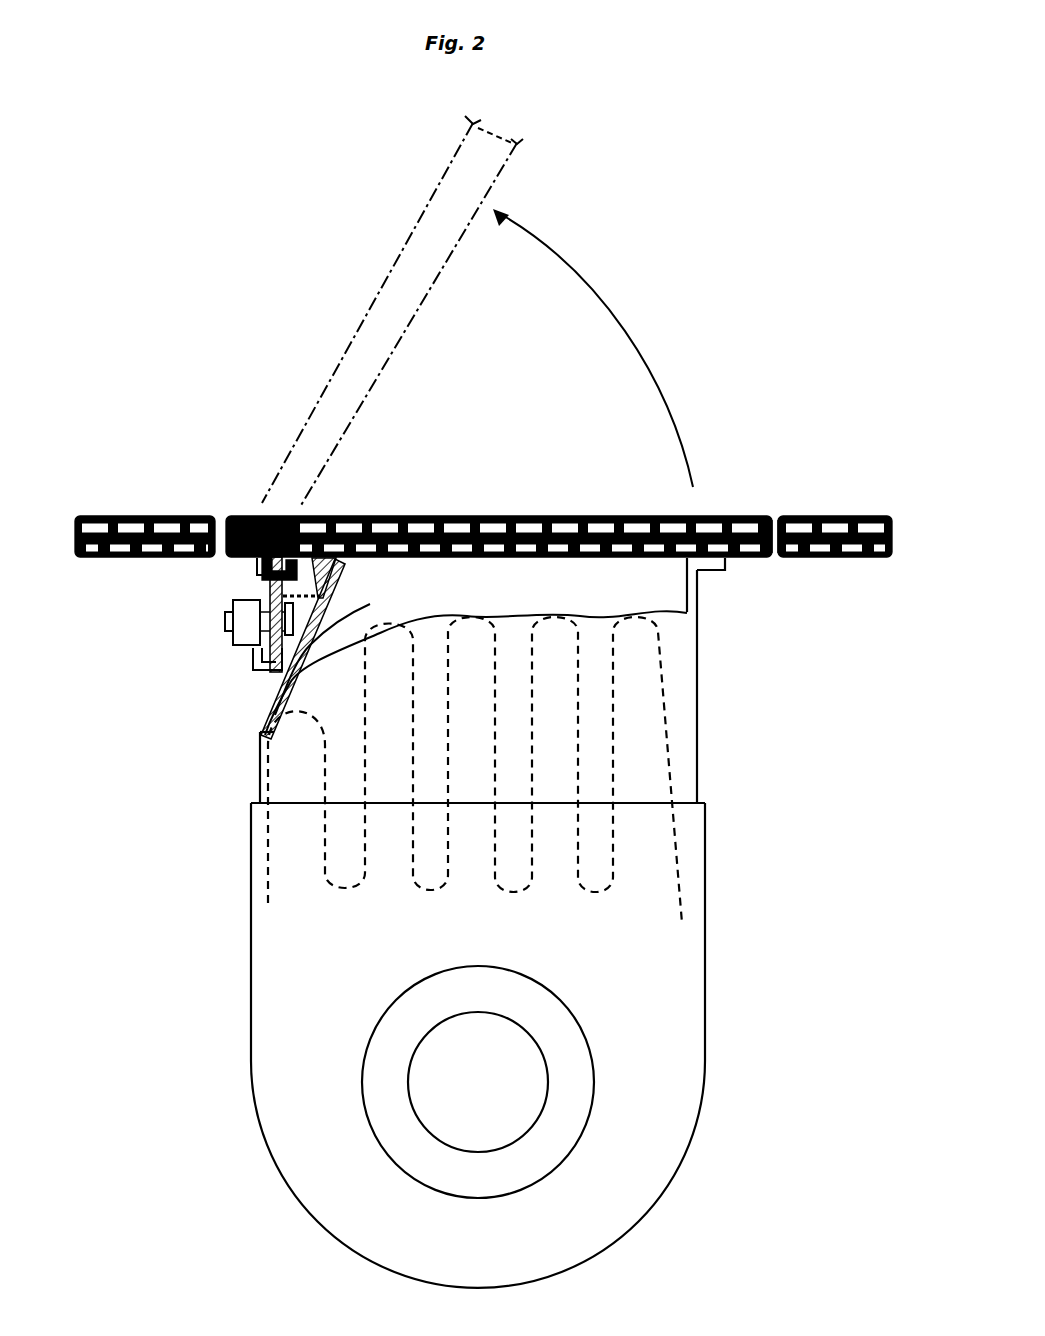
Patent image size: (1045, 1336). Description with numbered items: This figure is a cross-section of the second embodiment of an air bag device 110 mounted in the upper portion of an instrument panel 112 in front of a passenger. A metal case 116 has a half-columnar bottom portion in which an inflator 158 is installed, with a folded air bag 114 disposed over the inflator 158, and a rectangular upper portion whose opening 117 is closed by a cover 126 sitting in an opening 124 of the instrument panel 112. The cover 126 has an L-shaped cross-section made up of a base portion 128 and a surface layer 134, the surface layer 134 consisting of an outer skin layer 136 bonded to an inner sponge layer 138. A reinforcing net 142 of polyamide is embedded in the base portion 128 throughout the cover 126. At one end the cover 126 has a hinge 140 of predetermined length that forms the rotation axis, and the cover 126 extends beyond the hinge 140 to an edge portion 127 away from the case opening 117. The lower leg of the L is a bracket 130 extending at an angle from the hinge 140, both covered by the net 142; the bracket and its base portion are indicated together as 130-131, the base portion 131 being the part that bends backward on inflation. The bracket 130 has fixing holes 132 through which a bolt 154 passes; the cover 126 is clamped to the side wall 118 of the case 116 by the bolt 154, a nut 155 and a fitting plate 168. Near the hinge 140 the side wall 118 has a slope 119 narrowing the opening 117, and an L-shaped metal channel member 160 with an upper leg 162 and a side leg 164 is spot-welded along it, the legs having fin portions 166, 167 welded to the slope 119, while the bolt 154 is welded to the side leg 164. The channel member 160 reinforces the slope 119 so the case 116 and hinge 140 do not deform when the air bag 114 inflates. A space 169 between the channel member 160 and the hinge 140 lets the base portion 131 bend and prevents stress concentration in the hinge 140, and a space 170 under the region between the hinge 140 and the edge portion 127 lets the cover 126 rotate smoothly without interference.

The air bag device 110 is at (655, 1225).
The instrument panel 112 is at (845, 508).
The air bag 114 is at (322, 842).
The case 116 is at (660, 785).
The opening 117 is at (660, 578).
The side wall 118 is at (257, 772).
The slope 119 is at (263, 735).
The opening of the instrument panel 124 is at (776, 515).
The cover 126 is at (499, 336).
The edge portion 127 is at (216, 508).
The base portion 128 is at (553, 516).
The bracket and base portion 130-131 is at (237, 505).
The bracket 130 is at (236, 537).
The base portion of bracket 131 is at (253, 537).
The fixing holes 132 is at (252, 670).
The surface layer 134 is at (533, 470).
The outer skin layer 136 is at (458, 516).
The inner sponge layer 138 is at (506, 516).
The hinge 140 is at (289, 508).
The reinforcing net 142 is at (572, 561).
The bolt 154 is at (240, 637).
The nut 155 is at (245, 663).
The inflator 158 is at (568, 1060).
The channel member 160 is at (325, 620).
The upper leg 162 is at (342, 594).
The side leg 164 is at (476, 662).
The fin portion 166 is at (272, 712).
The fin portion 167 is at (354, 516).
The fitting plate 168 is at (250, 606).
The space 169 is at (253, 582).
The space 170 is at (257, 562).